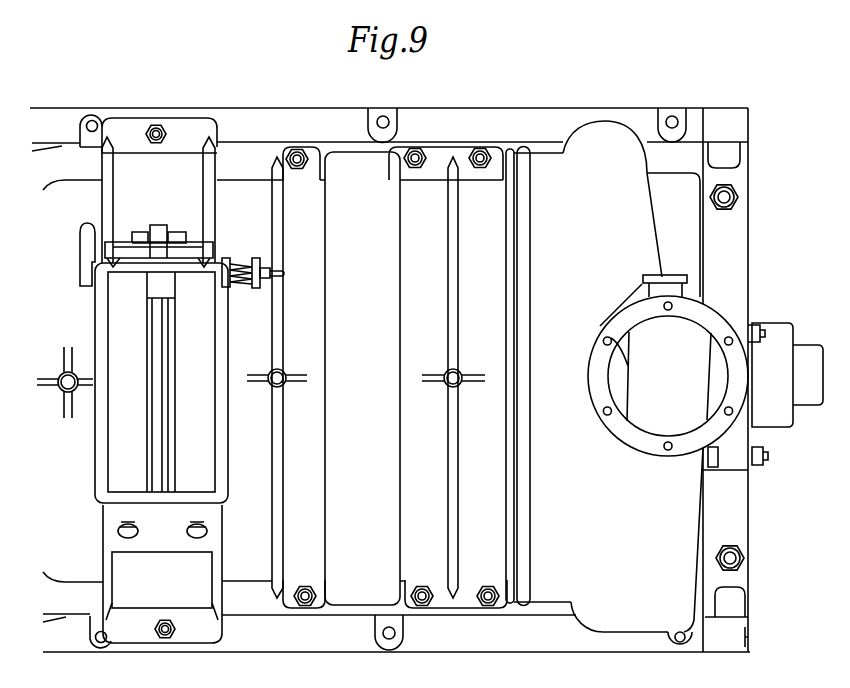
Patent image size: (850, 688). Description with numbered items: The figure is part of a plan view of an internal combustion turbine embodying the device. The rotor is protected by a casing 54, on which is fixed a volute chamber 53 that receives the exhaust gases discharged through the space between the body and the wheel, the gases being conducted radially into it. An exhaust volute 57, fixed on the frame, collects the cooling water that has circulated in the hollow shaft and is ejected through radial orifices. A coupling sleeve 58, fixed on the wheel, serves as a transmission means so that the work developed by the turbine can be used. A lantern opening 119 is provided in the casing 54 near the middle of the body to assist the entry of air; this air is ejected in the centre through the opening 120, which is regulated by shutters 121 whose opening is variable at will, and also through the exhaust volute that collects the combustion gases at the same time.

The volute chamber 53 is at (713, 322).
The casing 54 is at (488, 566).
The exhaust volute 57 is at (681, 288).
The coupling sleeve 58 is at (782, 338).
The lantern opening 119 is at (392, 338).
The opening 120 is at (167, 353).
The shutters 121 is at (233, 362).